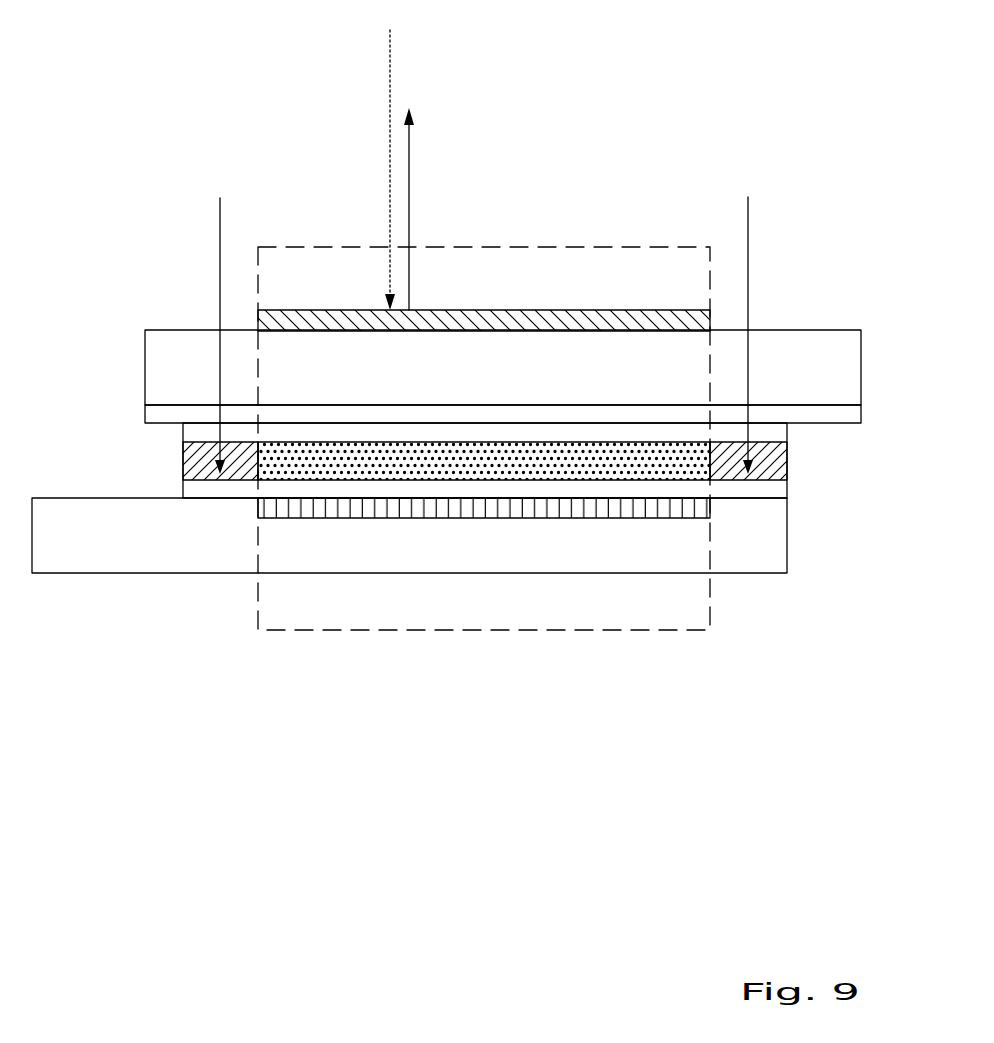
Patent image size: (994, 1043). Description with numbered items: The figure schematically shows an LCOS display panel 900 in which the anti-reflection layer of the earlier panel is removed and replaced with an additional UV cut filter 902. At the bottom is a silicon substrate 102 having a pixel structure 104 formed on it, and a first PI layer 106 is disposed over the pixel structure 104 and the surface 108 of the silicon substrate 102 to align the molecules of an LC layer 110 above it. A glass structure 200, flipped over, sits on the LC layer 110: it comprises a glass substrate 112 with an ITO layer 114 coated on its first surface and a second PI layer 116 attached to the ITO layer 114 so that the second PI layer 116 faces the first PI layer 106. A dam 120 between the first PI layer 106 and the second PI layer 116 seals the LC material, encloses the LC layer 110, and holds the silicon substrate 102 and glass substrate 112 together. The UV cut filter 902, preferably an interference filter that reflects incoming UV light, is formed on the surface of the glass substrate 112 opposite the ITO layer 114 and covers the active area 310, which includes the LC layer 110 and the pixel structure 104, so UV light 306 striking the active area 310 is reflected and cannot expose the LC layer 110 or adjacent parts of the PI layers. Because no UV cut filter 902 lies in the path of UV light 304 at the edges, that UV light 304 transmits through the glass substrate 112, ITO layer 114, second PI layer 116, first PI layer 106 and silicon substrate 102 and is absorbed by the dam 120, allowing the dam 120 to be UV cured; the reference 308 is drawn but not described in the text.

The LCOS display panel 900 is at (160, 166).
The UV light 306 is at (390, 70).
The emitted signal 308 is at (409, 158).
The UV light 304 is at (220, 235).
The UV cut filter 902 is at (630, 310).
The glass substrate 112 is at (278, 381).
The ITO layer 114 is at (861, 416).
The glass structure 200 is at (798, 331).
The second PI layer 116 is at (443, 421).
The first PI layer 106 is at (787, 490).
The dam 120 is at (183, 470).
The LC layer 110 is at (671, 475).
The silicon substrate 102 is at (113, 556).
The pixel structure 104 is at (558, 518).
The surface 108 is at (233, 500).
The active area 310 is at (317, 630).